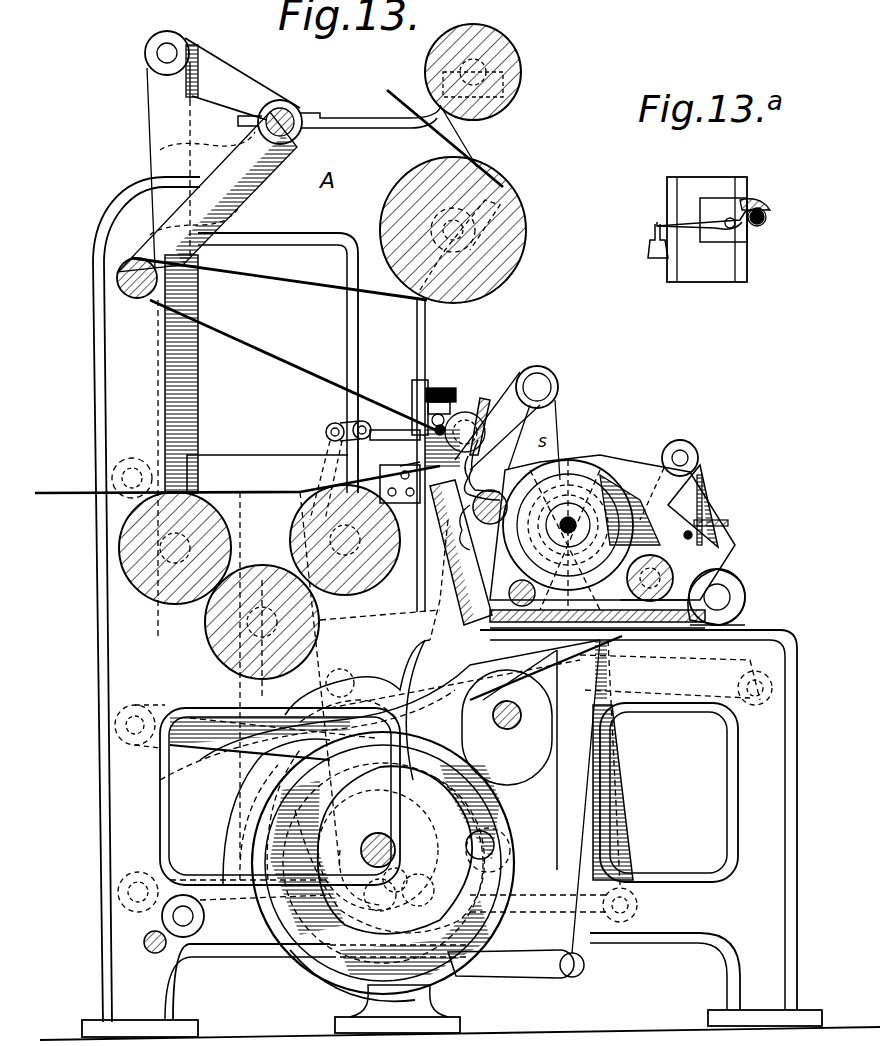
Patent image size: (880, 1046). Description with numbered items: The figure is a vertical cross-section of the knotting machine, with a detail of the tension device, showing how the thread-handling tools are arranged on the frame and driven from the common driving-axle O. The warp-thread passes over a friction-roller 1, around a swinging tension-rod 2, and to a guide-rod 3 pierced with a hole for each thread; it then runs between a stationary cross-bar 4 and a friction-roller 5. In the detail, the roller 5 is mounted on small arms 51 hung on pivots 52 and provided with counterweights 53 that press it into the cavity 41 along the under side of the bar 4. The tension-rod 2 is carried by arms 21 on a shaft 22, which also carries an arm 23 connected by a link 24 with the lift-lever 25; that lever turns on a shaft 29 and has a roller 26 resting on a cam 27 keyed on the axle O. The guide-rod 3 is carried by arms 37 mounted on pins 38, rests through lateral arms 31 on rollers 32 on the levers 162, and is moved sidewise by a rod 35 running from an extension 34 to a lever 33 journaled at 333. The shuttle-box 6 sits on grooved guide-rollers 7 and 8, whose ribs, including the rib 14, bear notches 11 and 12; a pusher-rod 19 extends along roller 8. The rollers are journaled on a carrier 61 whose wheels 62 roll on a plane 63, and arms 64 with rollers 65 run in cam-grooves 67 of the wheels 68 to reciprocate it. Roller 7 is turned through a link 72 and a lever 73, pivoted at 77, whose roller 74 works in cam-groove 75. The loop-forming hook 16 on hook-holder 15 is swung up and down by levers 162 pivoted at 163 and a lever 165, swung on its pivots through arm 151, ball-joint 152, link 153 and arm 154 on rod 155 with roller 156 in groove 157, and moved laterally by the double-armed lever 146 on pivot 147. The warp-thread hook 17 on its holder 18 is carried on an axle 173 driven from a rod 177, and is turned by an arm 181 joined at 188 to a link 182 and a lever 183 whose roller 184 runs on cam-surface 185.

In FIG. 13, the friction-roller 1 is at (520, 232).
In FIG. 13, the tension-rod 2 is at (115, 280).
In FIG. 13, the guide-rod 3 is at (428, 420).
In FIG. 13, the cross-bar 4 is at (409, 467).
In FIG. 13a, the cross-bar 4 is at (760, 203).
In FIG. 13, the friction-roller 5 is at (450, 527).
In FIG. 13a, the friction-roller 5 is at (762, 222).
In FIG. 13, the shuttle-box 6 is at (612, 482).
In FIG. 13, the shuttle-box guide-roller 7 is at (482, 552).
In FIG. 13, the shuttle-box guide-roller 8 is at (705, 578).
In FIG. 13, the notch 11 is at (568, 521).
In FIG. 13, the notch 12 is at (575, 535).
In FIG. 13, the rib 14 is at (661, 605).
In FIG. 13, the hook-holder 15 is at (472, 410).
In FIG. 13, the loop-forming hook 16 is at (482, 467).
In FIG. 13, the warp-thread hook 17 is at (702, 475).
In FIG. 13, the hook-holder 18 is at (722, 525).
In FIG. 13, the pusher-rod 19 is at (657, 570).
In FIG. 13, the arm 21 is at (250, 188).
In FIG. 13, the shaft 22 is at (284, 115).
In FIG. 13, the arm 23 is at (225, 74).
In FIG. 13, the link 24 is at (196, 380).
In FIG. 13, the lift-lever 25 is at (259, 582).
In FIG. 13, the roller 26 is at (345, 670).
In FIG. 13, the cam 27 is at (225, 828).
In FIG. 13, the shaft 29 is at (768, 688).
In FIG. 13, the laterally-extending arm 31 is at (418, 380).
In FIG. 13, the roller 32 is at (445, 385).
In FIG. 13, the lever 33 is at (280, 674).
In FIG. 13, the extension 34 is at (340, 424).
In FIG. 13, the rod 35 is at (328, 432).
In FIG. 13, the arm 37 is at (386, 479).
In FIG. 13, the pin 38 is at (395, 420).
In FIG. 13a, the cavity 41 is at (765, 216).
In FIG. 13a, the arm 51 is at (697, 240).
In FIG. 13a, the pivot 52 is at (727, 218).
In FIG. 13a, the counterweight 53 is at (648, 250).
In FIG. 13, the carrier 61 is at (726, 592).
In FIG. 13, the wheel 62 is at (740, 612).
In FIG. 13, the plane 63 is at (785, 630).
In FIG. 13, the arm 64 is at (420, 680).
In FIG. 13, the roller 65 is at (470, 842).
In FIG. 13, the cam-groove 67 is at (424, 856).
In FIG. 13, the wheel 68 is at (310, 985).
In FIG. 13, the link 72 is at (556, 780).
In FIG. 13, the lever 73 is at (486, 975).
In FIG. 13, the roller 74 is at (400, 945).
In FIG. 13, the cam-groove 75 is at (279, 815).
In FIG. 13, the pivot 77 is at (166, 918).
In FIG. 13, the double-armed lever 146 is at (448, 576).
In FIG. 13, the pivot 147 is at (430, 640).
In FIG. 13, the arm 151 is at (505, 385).
In FIG. 13, the ball-joint 152 is at (555, 388).
In FIG. 13, the link 153 is at (622, 818).
In FIG. 13, the arm 154 is at (545, 920).
In FIG. 13, the transverse rod 155 is at (122, 891).
In FIG. 13, the roller 156 is at (365, 898).
In FIG. 13, the groove 157 is at (431, 891).
In FIG. 13, the lever 162 is at (246, 458).
In FIG. 13, the pivot 163 is at (132, 468).
In FIG. 13, the lever 165 is at (206, 755).
In FIG. 13, the axle 173 is at (507, 730).
In FIG. 13, the transverse rod 177 is at (148, 950).
In FIG. 13, the arm 181 is at (712, 500).
In FIG. 13, the link 182 is at (605, 672).
In FIG. 13, the lever 183 is at (214, 870).
In FIG. 13, the roller 184 is at (406, 876).
In FIG. 13, the cam-surface 185 is at (335, 862).
In FIG. 13, the connection 188 is at (684, 448).
In FIG. 13, the journal 333 is at (380, 623).
In FIG. 13, the driving-axle O is at (383, 863).
In FIG. 13, the belt r is at (458, 133).